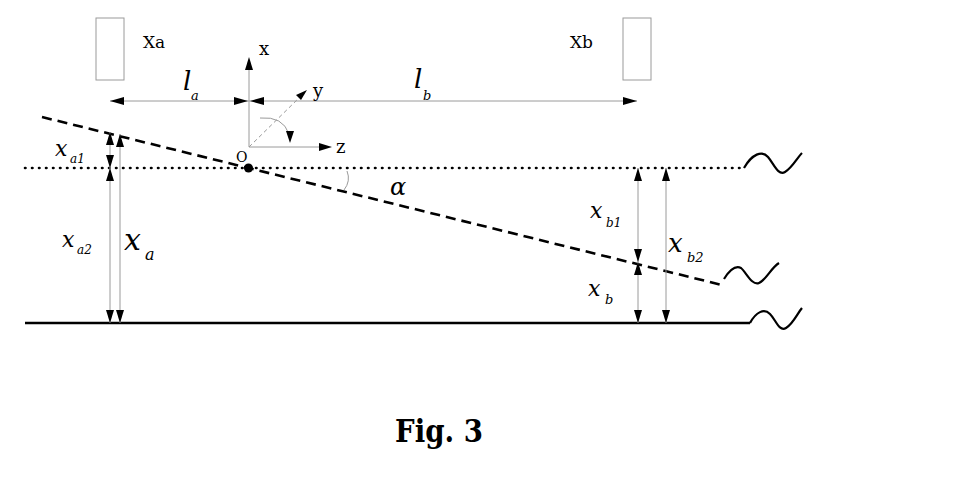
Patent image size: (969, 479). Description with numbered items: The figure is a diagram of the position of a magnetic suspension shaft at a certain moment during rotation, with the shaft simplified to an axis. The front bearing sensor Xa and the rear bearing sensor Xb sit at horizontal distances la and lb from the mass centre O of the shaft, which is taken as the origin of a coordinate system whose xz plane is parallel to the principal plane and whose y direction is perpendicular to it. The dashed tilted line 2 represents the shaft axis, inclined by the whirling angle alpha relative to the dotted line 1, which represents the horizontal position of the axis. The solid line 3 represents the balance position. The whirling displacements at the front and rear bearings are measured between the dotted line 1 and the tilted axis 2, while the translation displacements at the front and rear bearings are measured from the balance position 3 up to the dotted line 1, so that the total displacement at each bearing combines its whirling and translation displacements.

The dotted line 1 is at (428, 161).
The axis of the shaft 2 is at (424, 201).
The balance position line 3 is at (428, 316).